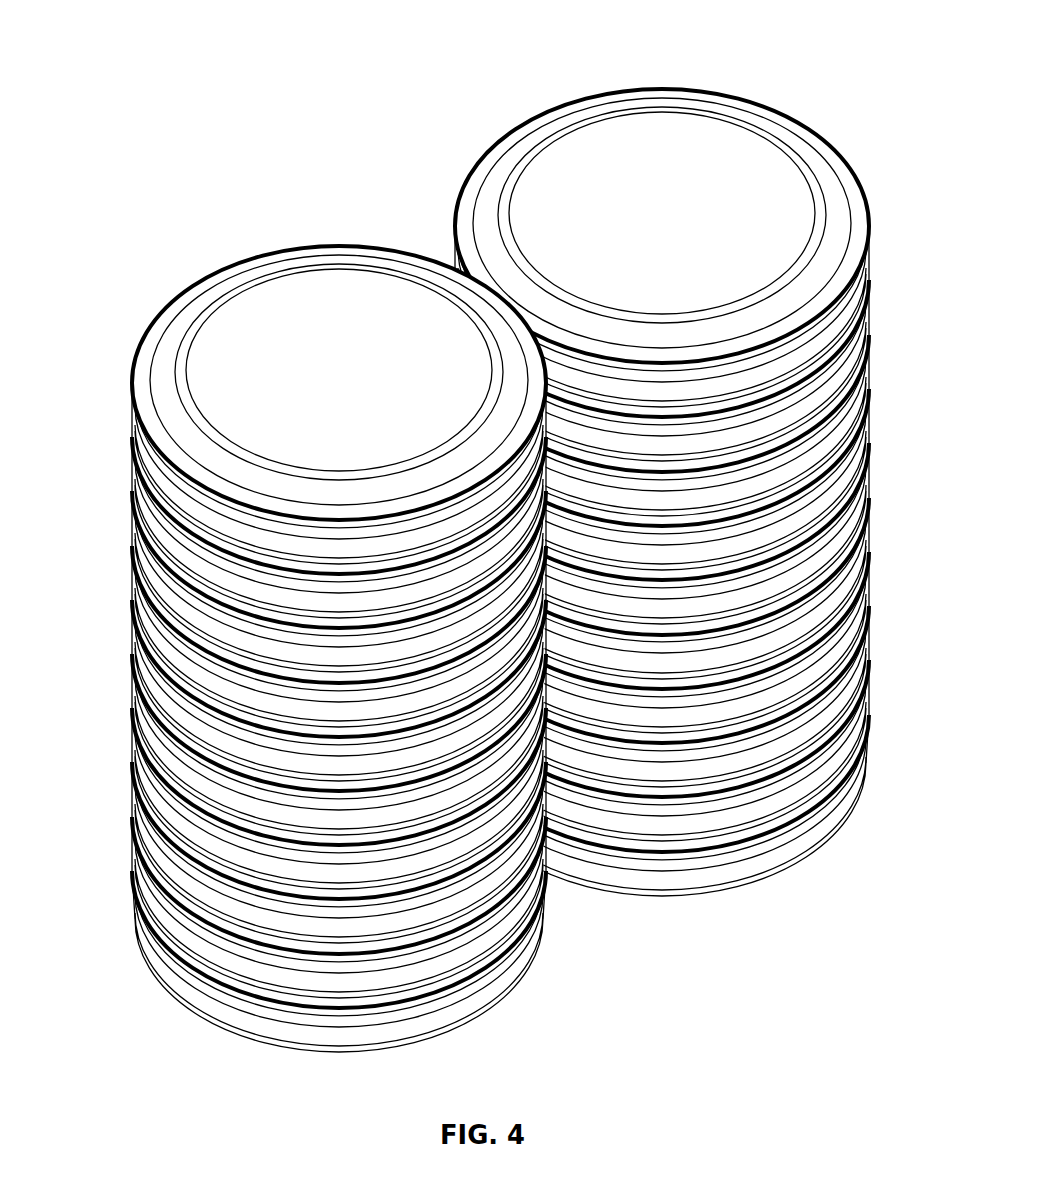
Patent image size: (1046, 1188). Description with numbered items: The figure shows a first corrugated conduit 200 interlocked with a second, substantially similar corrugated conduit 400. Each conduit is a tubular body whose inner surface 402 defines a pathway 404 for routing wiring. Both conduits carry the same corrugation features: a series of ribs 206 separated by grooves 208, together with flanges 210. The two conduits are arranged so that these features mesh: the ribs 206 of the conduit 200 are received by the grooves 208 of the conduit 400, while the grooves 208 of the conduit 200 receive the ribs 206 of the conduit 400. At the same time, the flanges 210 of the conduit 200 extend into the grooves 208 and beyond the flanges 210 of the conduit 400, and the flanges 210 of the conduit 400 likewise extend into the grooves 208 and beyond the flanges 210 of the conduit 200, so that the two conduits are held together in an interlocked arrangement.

The conduit 200 is at (198, 284).
The conduit 400 is at (730, 93).
The ribs 206 is at (842, 222).
The grooves 208 is at (848, 341).
The flanges 210 is at (863, 287).
The inner surface 402 is at (572, 172).
The pathway 404 is at (643, 149).